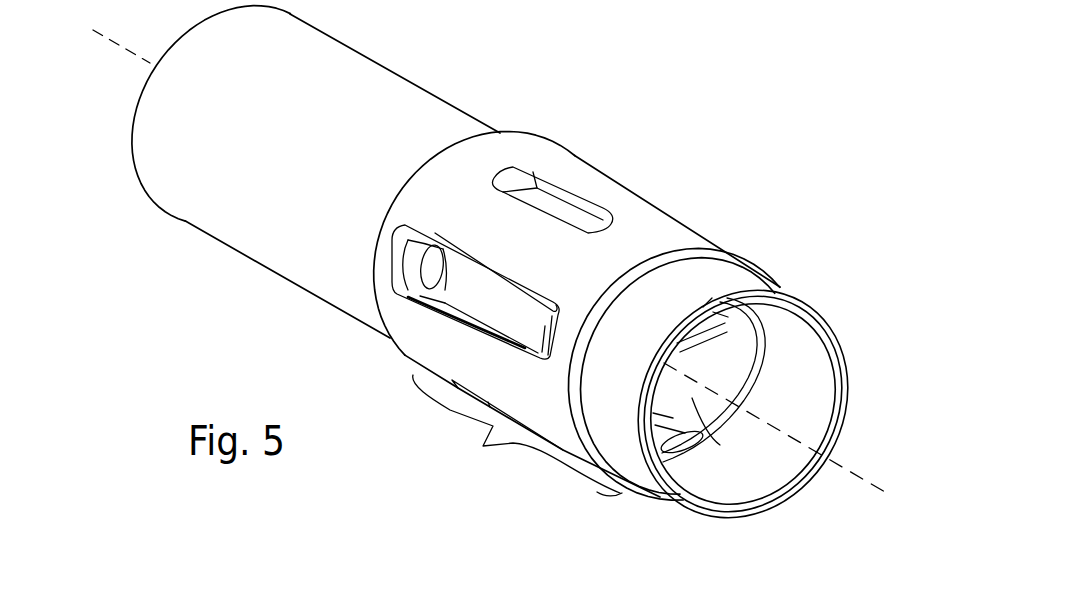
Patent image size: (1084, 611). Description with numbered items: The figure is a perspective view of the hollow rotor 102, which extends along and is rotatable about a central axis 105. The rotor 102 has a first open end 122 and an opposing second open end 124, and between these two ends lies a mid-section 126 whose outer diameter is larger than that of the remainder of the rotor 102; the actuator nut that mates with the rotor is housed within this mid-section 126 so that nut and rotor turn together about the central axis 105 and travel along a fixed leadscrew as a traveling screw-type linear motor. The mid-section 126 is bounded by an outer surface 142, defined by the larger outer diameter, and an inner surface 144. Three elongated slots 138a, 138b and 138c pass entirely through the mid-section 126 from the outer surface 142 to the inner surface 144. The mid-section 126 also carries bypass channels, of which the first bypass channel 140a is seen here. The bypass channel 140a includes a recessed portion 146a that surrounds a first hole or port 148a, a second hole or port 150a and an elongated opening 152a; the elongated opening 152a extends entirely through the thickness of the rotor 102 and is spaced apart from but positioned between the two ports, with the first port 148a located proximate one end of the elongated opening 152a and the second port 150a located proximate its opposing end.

The hollow rotor 102 is at (682, 62).
The central axis 105 is at (868, 483).
The first open end 122 is at (835, 333).
The second open end 124 is at (133, 104).
The mid-section 126 is at (484, 446).
The elongated slot 138a is at (563, 196).
The elongated slot 138b is at (500, 404).
The elongated slot 138c is at (758, 402).
The first bypass channel 140a is at (512, 265).
The outer surface 142 is at (645, 222).
The inner surface 144 is at (730, 445).
The recessed portion 146a is at (528, 298).
The first hole or port 148a is at (438, 272).
The second hole or port 150a is at (540, 337).
The elongated opening 152a is at (465, 318).